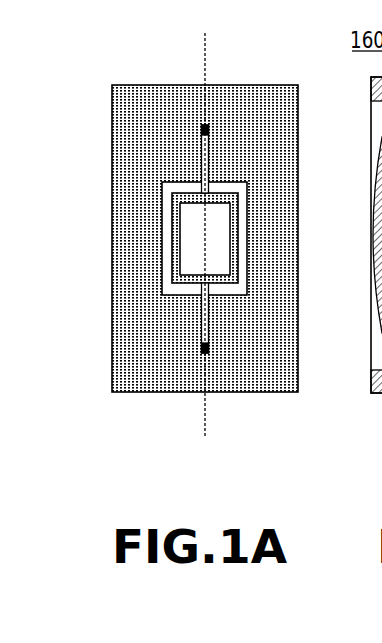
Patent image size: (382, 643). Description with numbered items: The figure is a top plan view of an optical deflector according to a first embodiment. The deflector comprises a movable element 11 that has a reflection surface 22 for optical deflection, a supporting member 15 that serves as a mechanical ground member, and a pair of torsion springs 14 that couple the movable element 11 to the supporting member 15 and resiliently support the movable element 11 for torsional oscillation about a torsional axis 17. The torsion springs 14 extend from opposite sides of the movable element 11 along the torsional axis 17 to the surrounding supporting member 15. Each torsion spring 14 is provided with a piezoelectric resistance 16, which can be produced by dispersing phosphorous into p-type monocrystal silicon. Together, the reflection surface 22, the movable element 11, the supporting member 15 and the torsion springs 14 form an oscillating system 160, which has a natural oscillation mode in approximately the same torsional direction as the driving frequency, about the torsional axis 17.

The oscillating system 160 is at (105, 58).
The supporting member 15 is at (273, 354).
The movable element 11 is at (172, 193).
The reflection surface 22 is at (200, 238).
The torsion springs 14 is at (201, 160).
The piezoelectric resistance 16 is at (201, 131).
The torsional axis 17 is at (209, 219).